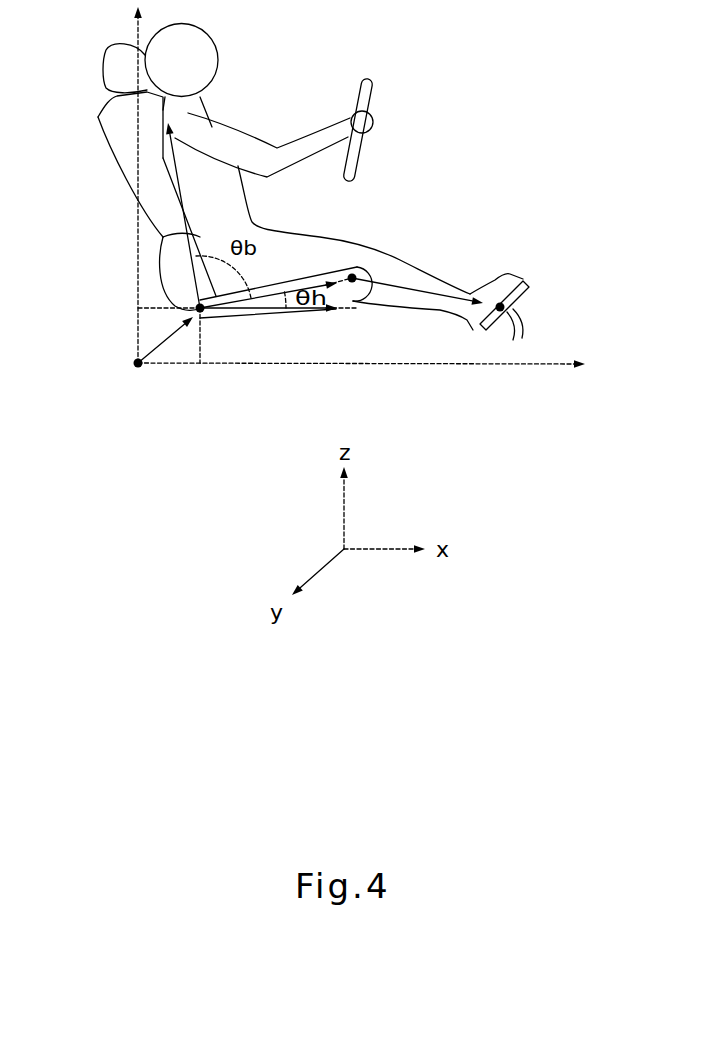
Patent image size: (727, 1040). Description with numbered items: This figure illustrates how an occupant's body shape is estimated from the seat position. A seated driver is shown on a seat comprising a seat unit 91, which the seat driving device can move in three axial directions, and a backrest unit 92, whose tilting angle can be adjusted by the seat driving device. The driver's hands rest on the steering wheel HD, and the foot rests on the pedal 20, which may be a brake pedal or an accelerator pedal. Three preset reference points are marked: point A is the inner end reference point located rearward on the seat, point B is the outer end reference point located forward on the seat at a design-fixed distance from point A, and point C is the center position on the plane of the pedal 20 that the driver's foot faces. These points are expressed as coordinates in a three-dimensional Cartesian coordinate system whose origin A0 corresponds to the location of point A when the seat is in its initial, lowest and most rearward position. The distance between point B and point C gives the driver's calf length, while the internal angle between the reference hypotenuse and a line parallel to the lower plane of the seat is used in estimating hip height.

The backrest unit 92 is at (112, 148).
The seat unit 91 is at (353, 298).
The pedal 20 is at (522, 296).
The steering wheel HD is at (372, 98).
The origin A0 is at (128, 377).
The point A is at (191, 329).
The point B is at (365, 266).
The point C is at (496, 294).